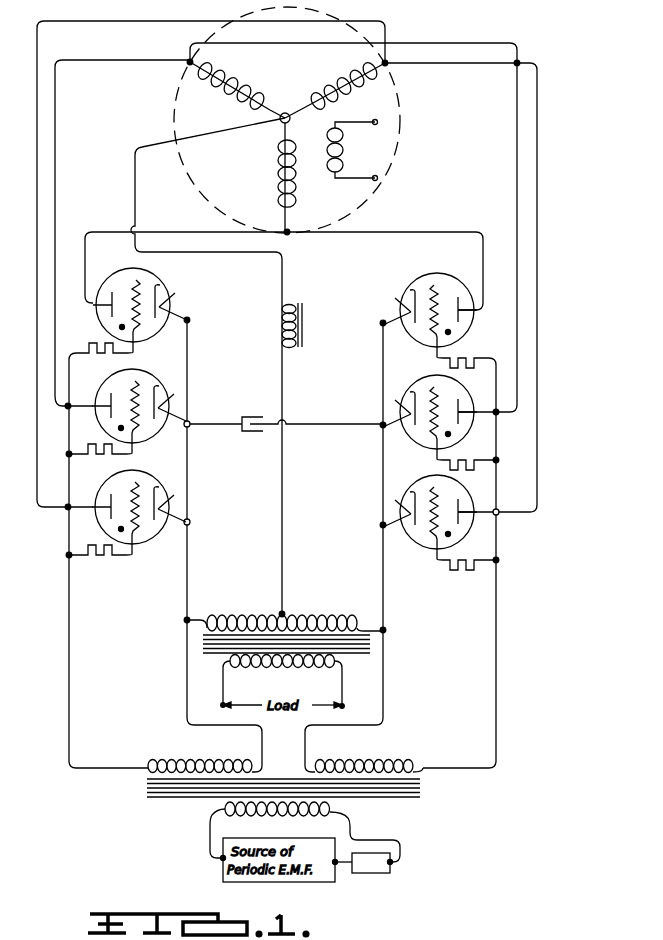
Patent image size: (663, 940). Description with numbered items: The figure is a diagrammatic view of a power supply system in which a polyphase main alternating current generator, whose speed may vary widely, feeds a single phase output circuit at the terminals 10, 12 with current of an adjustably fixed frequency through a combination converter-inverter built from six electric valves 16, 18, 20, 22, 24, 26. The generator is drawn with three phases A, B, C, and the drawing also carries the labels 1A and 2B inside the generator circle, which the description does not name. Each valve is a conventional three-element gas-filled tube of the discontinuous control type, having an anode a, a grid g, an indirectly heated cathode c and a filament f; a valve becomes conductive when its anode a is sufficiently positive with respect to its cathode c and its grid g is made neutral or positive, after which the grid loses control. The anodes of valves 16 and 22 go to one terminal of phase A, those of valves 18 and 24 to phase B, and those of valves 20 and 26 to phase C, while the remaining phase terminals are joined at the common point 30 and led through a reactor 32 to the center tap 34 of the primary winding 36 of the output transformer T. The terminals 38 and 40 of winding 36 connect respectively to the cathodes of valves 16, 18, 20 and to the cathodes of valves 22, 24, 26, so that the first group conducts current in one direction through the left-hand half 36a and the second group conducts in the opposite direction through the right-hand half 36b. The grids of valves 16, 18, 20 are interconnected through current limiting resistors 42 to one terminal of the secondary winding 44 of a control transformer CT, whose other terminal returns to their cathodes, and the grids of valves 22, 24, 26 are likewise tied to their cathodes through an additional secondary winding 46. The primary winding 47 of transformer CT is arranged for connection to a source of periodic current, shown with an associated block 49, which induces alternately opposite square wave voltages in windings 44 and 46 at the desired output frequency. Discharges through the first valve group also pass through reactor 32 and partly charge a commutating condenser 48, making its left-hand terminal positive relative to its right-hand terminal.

The phase A is at (297, 193).
The phase B is at (238, 83).
The phase C is at (347, 74).
The common connection point 30 is at (280, 127).
The motor 1A is at (380, 114).
The field winding 2B is at (346, 126).
The electric valve 16 is at (168, 288).
The electric valve 18 is at (156, 387).
The electric valve 20 is at (148, 481).
The electric valve 22 is at (443, 278).
The electric valve 24 is at (460, 396).
The electric valve 26 is at (455, 498).
The anode a is at (113, 288).
The grid g is at (141, 283).
The cathode c is at (150, 334).
The filament f is at (190, 318).
The current limiting resistor 42 is at (88, 357).
The reactor 32 is at (299, 309).
The commutating condenser 48 is at (250, 433).
The output transformer T is at (305, 639).
The center tap 34 is at (284, 613).
The primary winding 36 is at (346, 614).
The left-hand half of primary winding 36a is at (243, 615).
The right-hand half of primary winding 36b is at (326, 614).
The terminal of primary winding 38 is at (189, 618).
The terminal of primary winding 40 is at (386, 624).
The output circuit terminal 10 is at (236, 715).
The output circuit terminal 12 is at (333, 715).
The control transformer CT is at (296, 788).
The secondary winding of control transformer 44 is at (164, 762).
The additional secondary winding of control transformer 46 is at (376, 763).
The primary winding of control transformer 47 is at (352, 822).
The phase shift control 49 is at (405, 857).